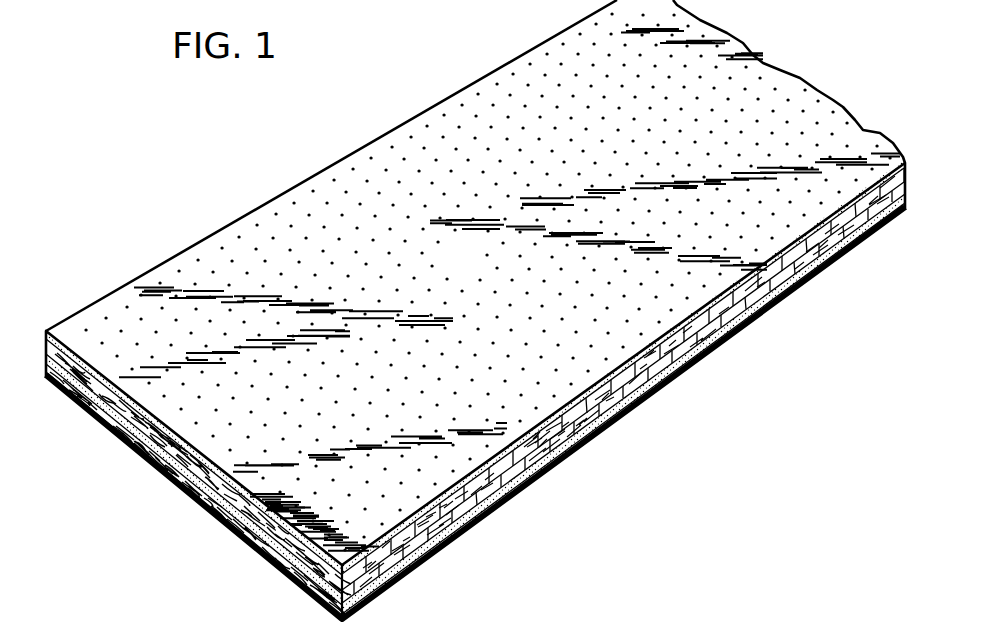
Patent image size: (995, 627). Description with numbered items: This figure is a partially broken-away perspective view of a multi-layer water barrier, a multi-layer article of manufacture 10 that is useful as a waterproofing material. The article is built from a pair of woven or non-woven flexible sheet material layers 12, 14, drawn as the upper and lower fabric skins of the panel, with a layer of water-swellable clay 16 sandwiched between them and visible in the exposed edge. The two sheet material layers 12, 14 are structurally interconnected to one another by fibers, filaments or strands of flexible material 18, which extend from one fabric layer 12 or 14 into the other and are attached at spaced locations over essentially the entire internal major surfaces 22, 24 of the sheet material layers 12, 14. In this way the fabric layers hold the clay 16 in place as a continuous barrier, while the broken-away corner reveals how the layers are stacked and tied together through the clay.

The multi-layer article of manufacture 10 is at (176, 193).
The flexible sheet material layer 12 is at (476, 264).
The flexible sheet material layer 14 is at (437, 553).
The layer of water-swellable clay 16 is at (497, 487).
The fibers, filaments or strands of flexible material 18 is at (635, 407).
The internal major surface 22 is at (778, 303).
The internal major surface 24 is at (718, 353).